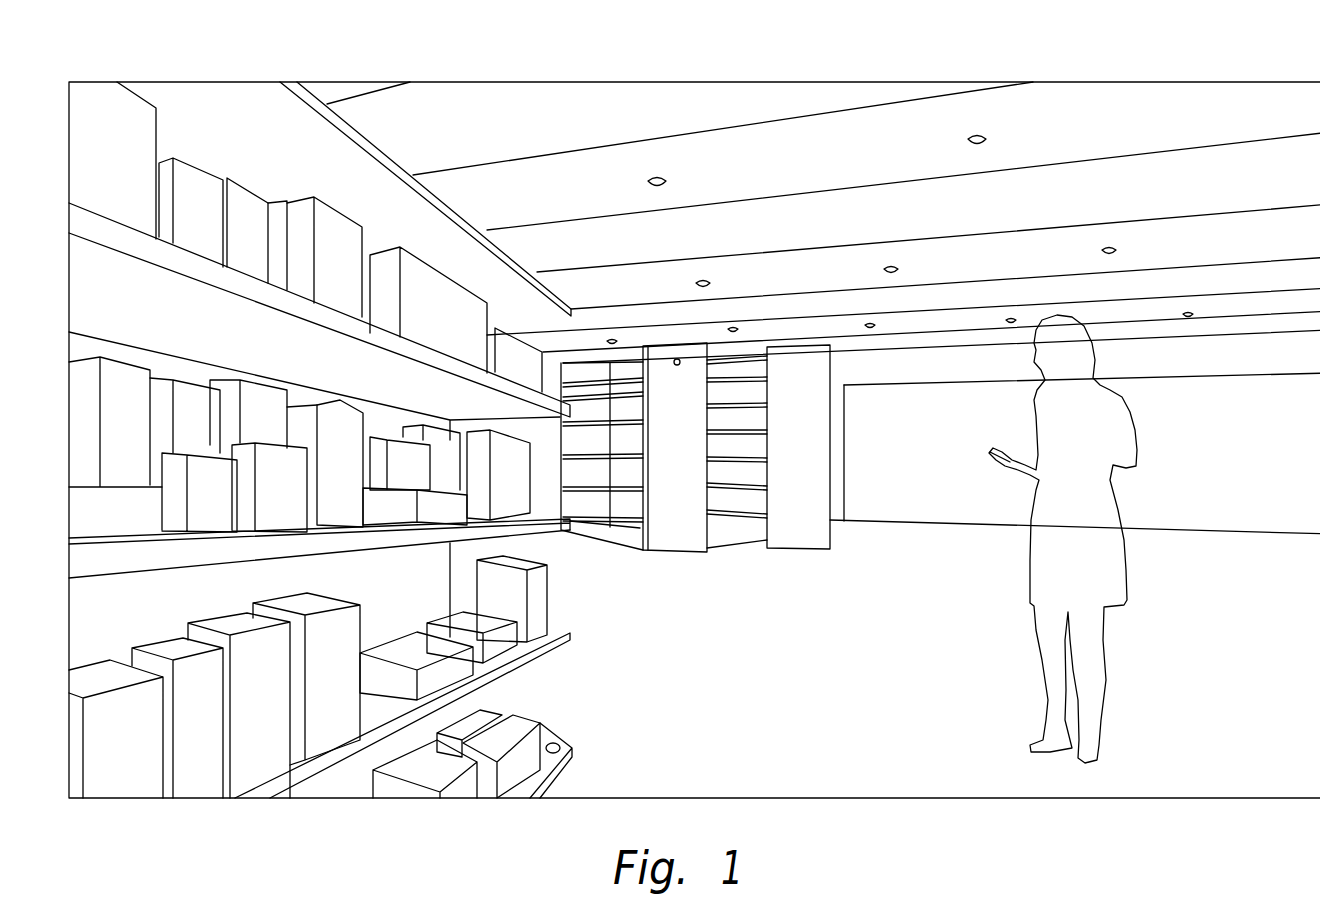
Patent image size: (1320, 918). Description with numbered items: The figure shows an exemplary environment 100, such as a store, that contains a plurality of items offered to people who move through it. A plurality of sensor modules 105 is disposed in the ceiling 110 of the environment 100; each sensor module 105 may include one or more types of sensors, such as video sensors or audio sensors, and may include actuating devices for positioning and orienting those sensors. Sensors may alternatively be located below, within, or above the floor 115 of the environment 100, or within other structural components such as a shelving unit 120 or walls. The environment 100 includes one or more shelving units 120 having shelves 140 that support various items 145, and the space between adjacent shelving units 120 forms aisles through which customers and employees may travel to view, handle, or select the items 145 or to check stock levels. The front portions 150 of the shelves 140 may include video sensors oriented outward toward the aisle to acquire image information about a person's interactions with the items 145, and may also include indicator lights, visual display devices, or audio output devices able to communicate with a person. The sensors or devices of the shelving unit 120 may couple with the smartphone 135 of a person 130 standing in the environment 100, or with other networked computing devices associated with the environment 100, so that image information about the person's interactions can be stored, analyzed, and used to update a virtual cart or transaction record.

The environment 100 is at (1224, 55).
The sensor modules 105 is at (986, 137).
The ceiling 110 is at (1122, 165).
The floor 115 is at (1208, 729).
The shelving unit 120 is at (478, 204).
The person 130 is at (1135, 433).
The smartphone 135 is at (982, 439).
The shelves 140 is at (110, 230).
The items 145 is at (235, 505).
The front portions 150 is at (475, 373).